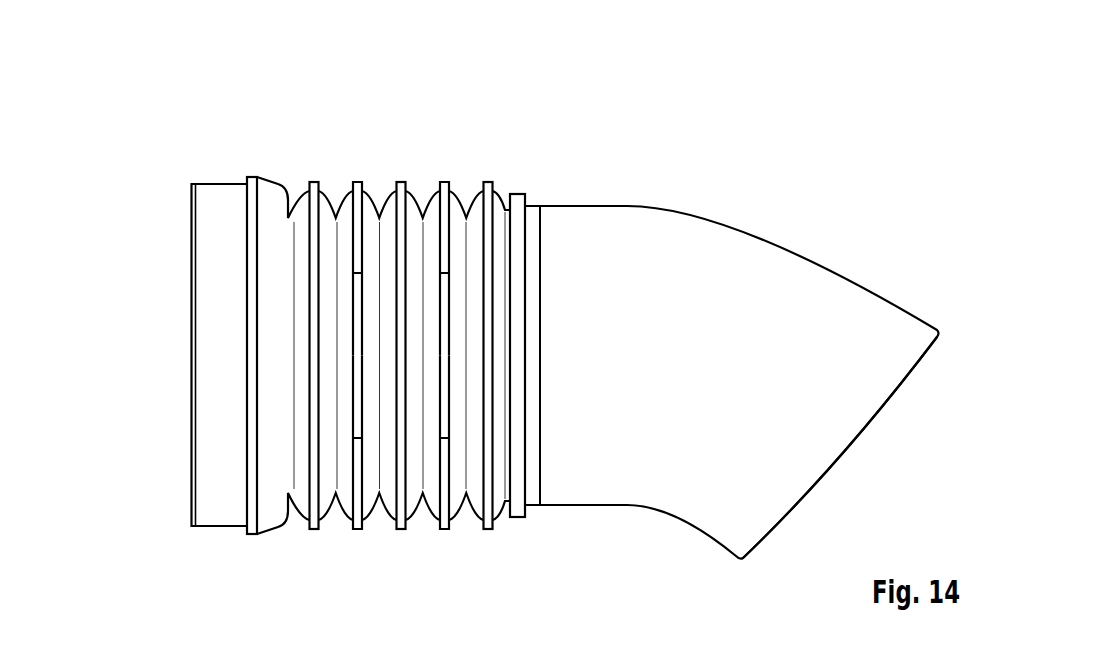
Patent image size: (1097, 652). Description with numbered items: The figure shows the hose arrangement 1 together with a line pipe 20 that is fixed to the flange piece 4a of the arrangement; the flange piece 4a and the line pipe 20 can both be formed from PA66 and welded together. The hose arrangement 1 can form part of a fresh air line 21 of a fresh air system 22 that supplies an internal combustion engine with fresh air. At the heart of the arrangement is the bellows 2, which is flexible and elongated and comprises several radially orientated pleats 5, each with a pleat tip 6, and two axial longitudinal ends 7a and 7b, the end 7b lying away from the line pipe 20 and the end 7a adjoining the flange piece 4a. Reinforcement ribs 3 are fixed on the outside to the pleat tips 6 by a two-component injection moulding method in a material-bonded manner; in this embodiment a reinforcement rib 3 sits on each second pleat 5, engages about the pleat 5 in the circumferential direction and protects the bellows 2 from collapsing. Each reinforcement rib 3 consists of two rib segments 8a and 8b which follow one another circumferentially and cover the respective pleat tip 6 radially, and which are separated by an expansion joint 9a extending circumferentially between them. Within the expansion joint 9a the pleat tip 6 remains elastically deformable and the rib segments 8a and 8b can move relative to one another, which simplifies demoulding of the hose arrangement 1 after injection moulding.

The hose arrangement 1 is at (217, 147).
The bellows 2 is at (462, 163).
The reinforcement rib 3 is at (381, 323).
The rib segment 8a is at (358, 185).
The rib segment 8b is at (442, 526).
The flange piece 4a is at (529, 212).
The pleat 5 is at (299, 190).
The pleat tip 6 is at (325, 197).
The axial longitudinal end 7a is at (552, 348).
The axial longitudinal end 7b is at (170, 348).
The expansion joint 9a is at (358, 365).
The line pipe 20 is at (768, 245).
The fresh air line 21 is at (840, 315).
The fresh air system 22 is at (858, 98).